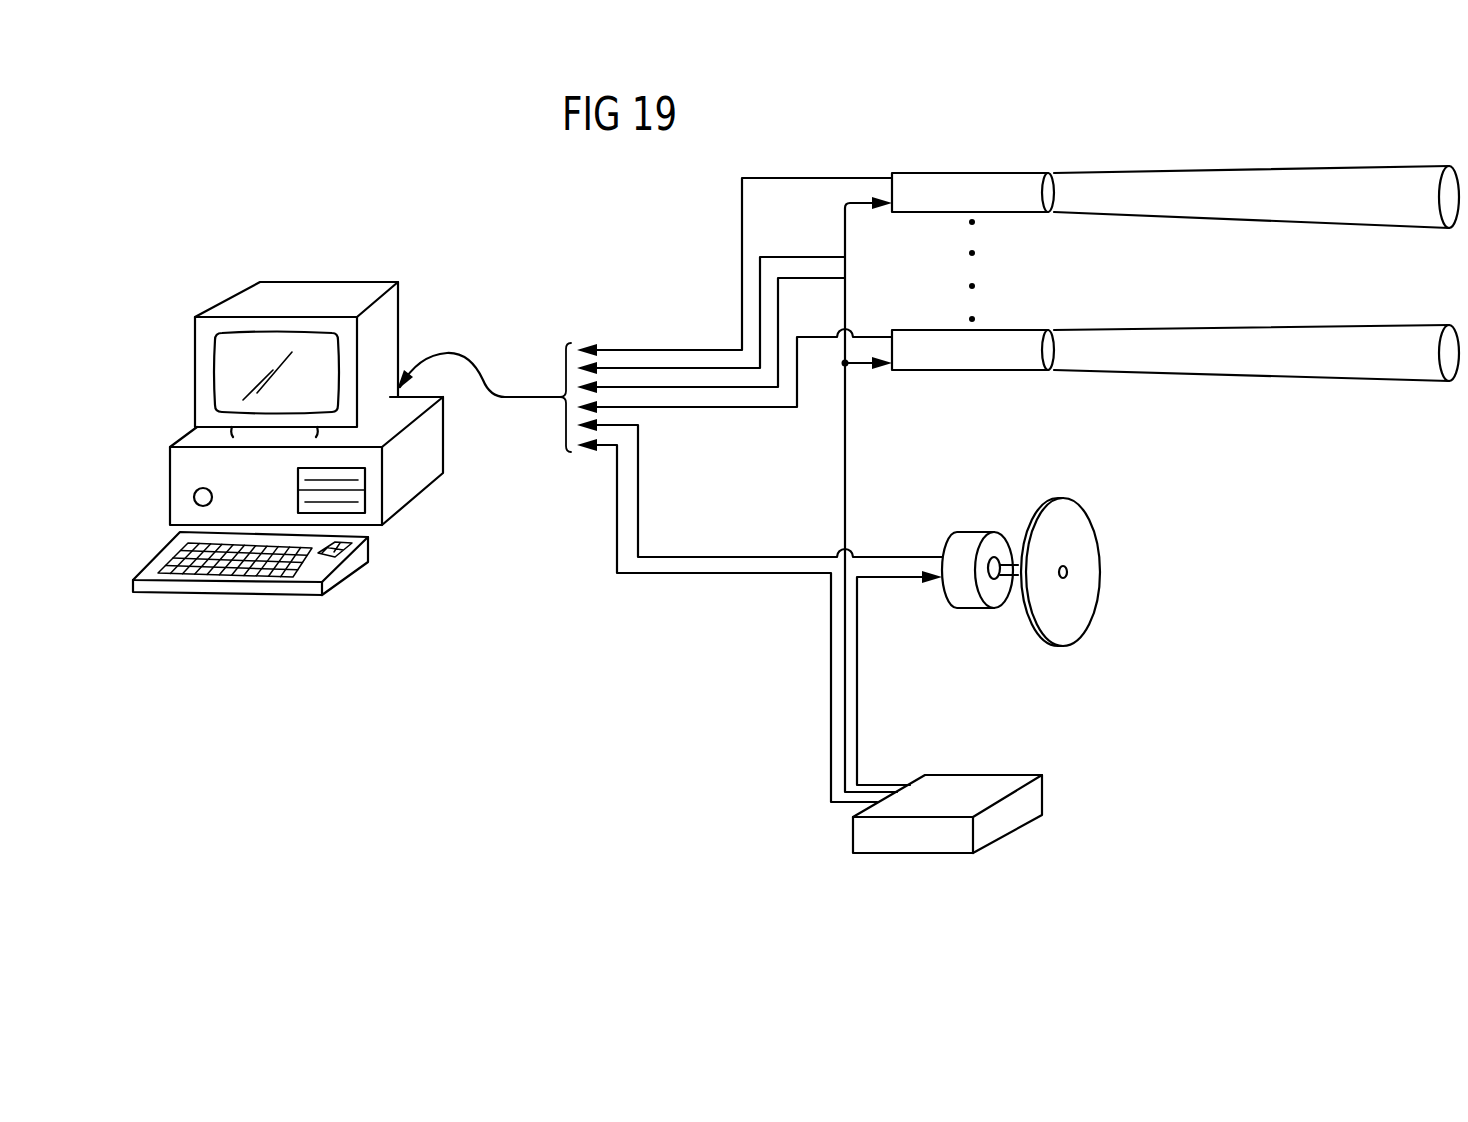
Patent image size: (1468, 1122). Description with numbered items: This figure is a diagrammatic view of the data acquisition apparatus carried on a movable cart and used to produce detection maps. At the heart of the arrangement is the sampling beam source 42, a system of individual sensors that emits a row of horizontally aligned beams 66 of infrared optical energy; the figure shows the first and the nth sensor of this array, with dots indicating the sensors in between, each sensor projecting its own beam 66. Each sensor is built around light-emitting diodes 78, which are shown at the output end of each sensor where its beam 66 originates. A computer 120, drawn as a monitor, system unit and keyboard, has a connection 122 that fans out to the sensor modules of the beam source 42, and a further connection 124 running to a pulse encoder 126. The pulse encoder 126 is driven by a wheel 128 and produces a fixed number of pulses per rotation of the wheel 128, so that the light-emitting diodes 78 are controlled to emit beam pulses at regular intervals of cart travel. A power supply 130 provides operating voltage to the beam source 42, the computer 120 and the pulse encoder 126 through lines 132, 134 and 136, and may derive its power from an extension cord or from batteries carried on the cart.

The sampling beam source 42 is at (1001, 162).
The beam 66 is at (1358, 164).
The light-emitting diode 78 is at (1040, 174).
The computer 120 is at (403, 290).
The connection 122 is at (509, 398).
The connection 124 is at (699, 556).
The pulse encoder 126 is at (943, 598).
The wheel 128 is at (1055, 500).
The power supply 130 is at (1042, 795).
The line 132 is at (845, 713).
The line 134 is at (829, 763).
The line 136 is at (857, 760).